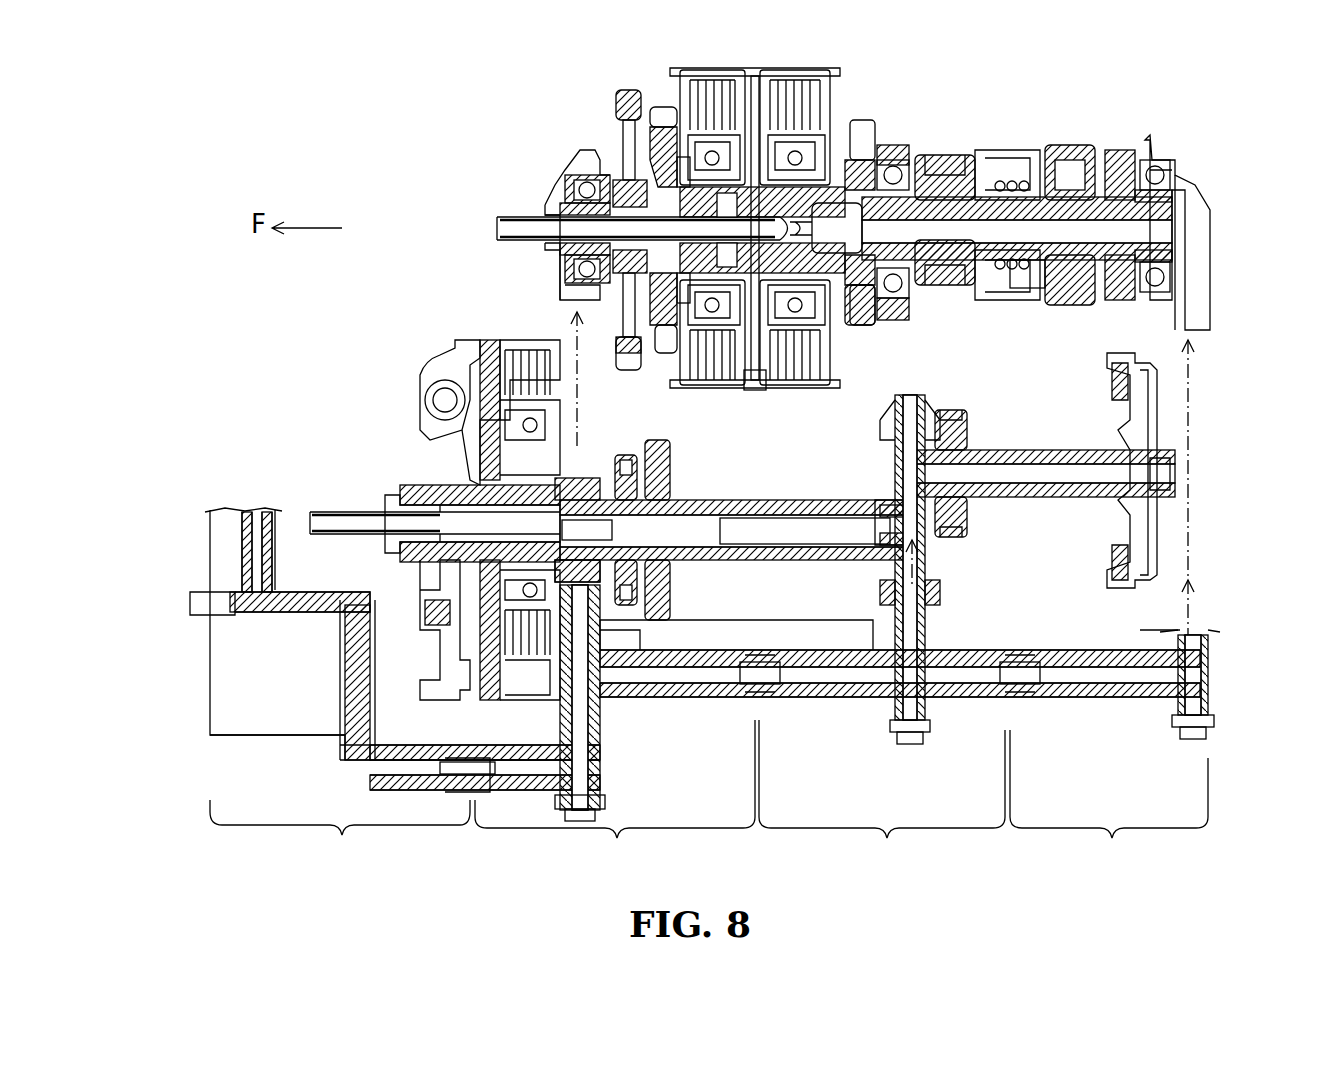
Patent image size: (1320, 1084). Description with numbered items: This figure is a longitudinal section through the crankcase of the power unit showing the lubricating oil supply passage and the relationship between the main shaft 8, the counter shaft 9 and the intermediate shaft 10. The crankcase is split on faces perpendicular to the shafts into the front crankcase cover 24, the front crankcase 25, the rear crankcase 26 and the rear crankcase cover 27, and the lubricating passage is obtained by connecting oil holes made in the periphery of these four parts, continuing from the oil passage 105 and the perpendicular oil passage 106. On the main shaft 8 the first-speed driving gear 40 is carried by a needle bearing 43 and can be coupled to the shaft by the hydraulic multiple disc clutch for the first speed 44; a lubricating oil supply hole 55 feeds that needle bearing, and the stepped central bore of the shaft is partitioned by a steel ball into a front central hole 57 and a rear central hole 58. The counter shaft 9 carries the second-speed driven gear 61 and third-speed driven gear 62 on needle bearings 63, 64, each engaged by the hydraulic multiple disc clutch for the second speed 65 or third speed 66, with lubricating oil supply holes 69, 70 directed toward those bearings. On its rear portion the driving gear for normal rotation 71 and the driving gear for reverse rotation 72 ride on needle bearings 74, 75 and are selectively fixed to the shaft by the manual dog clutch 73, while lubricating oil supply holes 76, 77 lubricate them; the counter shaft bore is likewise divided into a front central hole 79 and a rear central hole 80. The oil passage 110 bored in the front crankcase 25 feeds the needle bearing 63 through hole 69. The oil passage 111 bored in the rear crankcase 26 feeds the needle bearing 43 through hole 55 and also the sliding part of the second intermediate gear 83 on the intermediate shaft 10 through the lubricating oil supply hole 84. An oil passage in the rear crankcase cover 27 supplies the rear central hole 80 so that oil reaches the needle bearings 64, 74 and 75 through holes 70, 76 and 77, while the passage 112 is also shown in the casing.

The main shaft 8 is at (768, 503).
The counter shaft 9 is at (940, 330).
The intermediate shaft 10 is at (1045, 455).
The front crankcase cover 24 is at (340, 831).
The front crankcase 25 is at (615, 794).
The rear crankcase 26 is at (882, 794).
The rear crankcase cover 27 is at (1109, 801).
The first-speed driving gear 40 is at (630, 465).
The needle bearing 43 is at (575, 480).
The hydraulic multiple disc clutch for the first speed 44 is at (512, 352).
The lubricating oil supply hole 55 is at (580, 535).
The front central hole 57 is at (410, 485).
The rear central hole 58 is at (805, 530).
The second-speed driven gear 61 is at (670, 180).
The third-speed driven gear 62 is at (880, 160).
The needle bearing 63 is at (655, 165).
The needle bearing 64 is at (920, 150).
The hydraulic multiple disc clutch for the second speed 65 is at (664, 97).
The hydraulic multiple disc clutch for the third speed 66 is at (847, 106).
The lubricating oil supply hole 69 is at (578, 197).
The lubricating oil supply hole 70 is at (826, 228).
The driving gear for normal rotation 71 is at (955, 160).
The driving gear for reverse rotation 72 is at (1120, 150).
The manual dog clutch 73 is at (1055, 150).
The needle bearing 74 is at (1010, 150).
The needle bearing 75 is at (1160, 170).
The lubricating oil supply hole 76 is at (960, 220).
The lubricating oil supply hole 77 is at (1110, 220).
The front central hole 79 is at (755, 375).
The rear central hole 80 is at (1020, 257).
The second intermediate gear 83 is at (955, 410).
The lubricating oil supply hole 84 is at (1010, 470).
The oil passage 105 is at (240, 540).
The oil passage 106 is at (270, 620).
The oil passage 110 is at (560, 284).
The oil passage 111 is at (925, 620).
The partition line 112 is at (1195, 283).